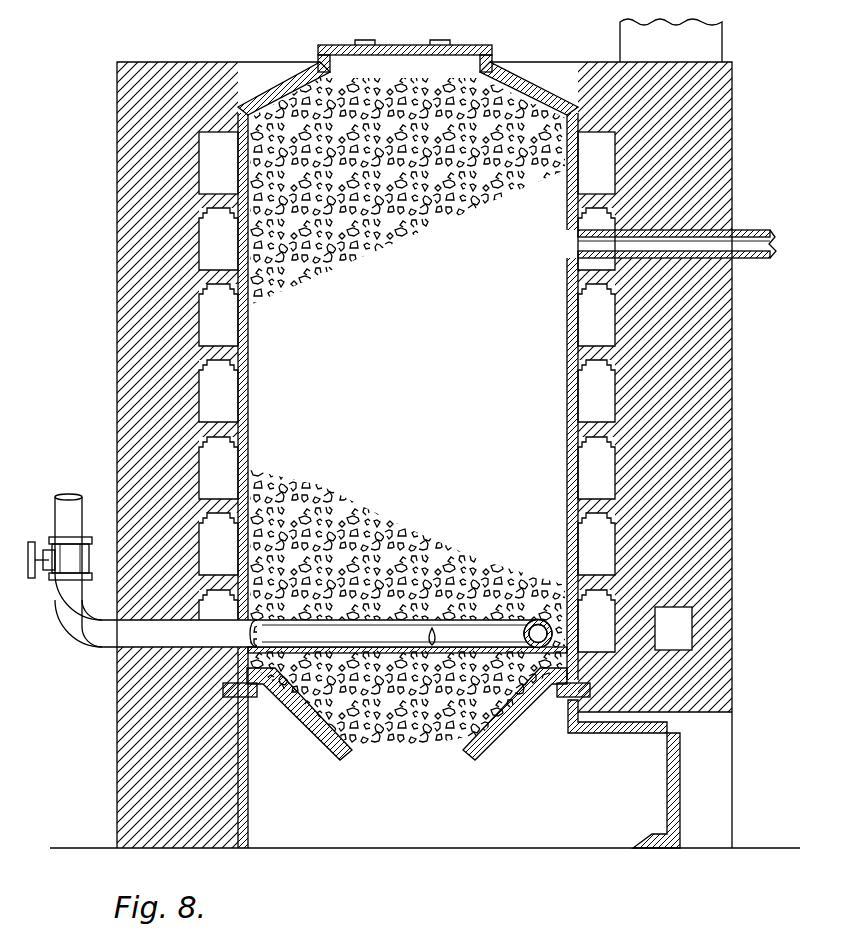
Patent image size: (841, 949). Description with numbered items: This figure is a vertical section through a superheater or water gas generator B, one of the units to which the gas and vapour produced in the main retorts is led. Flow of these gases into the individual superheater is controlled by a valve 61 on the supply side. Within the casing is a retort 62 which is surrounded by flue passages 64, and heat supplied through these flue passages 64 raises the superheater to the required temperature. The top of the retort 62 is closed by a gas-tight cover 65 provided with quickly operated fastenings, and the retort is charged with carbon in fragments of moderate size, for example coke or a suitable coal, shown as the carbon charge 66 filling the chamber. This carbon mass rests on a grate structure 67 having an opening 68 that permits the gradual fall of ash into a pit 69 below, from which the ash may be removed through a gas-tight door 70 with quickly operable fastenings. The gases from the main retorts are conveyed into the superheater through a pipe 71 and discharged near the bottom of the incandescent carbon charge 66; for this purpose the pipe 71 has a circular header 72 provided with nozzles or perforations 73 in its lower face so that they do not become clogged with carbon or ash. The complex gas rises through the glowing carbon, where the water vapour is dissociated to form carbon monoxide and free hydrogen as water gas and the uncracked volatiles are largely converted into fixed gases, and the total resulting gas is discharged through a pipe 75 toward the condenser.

The valve 61 is at (46, 548).
The retort 62 is at (641, 455).
The flue passages 64 is at (593, 460).
The gas-tight cover 65 is at (482, 48).
The charge material 66 is at (404, 200).
The grate structure 67 is at (298, 723).
The opening 68 is at (352, 758).
The pit 69 is at (434, 832).
The gas-tight door 70 is at (682, 778).
The pipe 71 is at (100, 632).
The circular header 72 is at (355, 632).
The nozzles or perforations 73 is at (481, 643).
The pipe 75 is at (772, 230).
The superheater B is at (705, 54).